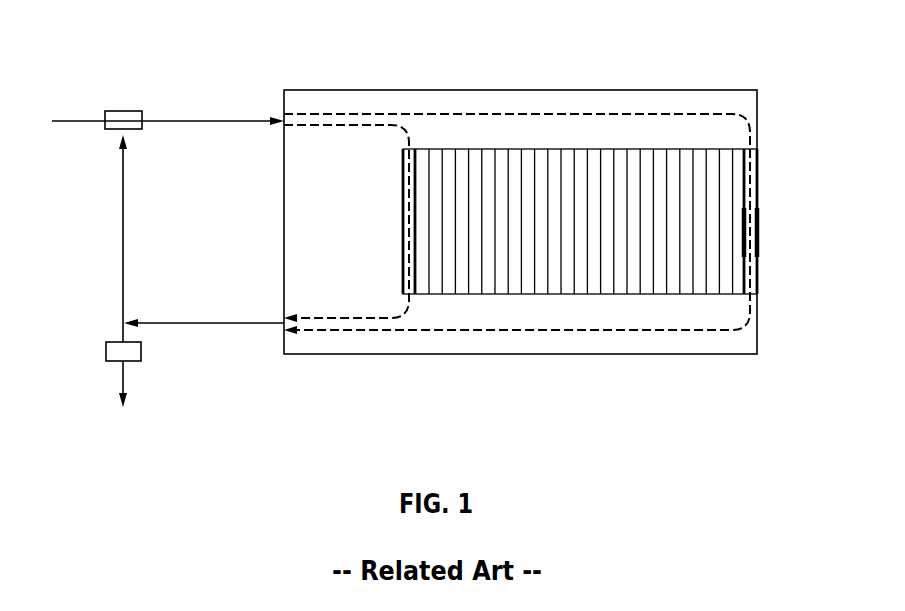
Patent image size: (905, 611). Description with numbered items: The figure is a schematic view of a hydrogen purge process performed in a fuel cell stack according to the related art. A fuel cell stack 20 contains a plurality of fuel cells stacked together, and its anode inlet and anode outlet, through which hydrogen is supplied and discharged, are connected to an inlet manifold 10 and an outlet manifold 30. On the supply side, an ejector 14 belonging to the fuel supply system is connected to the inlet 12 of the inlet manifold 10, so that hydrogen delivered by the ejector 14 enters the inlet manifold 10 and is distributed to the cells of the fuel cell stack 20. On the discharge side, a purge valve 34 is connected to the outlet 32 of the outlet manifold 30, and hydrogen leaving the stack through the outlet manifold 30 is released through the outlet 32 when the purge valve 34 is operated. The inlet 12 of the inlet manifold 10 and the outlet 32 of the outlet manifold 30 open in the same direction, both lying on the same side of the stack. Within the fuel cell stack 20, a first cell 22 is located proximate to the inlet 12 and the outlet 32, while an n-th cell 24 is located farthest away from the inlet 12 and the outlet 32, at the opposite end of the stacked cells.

The inlet manifold 10 is at (522, 84).
The inlet 12 is at (284, 139).
The ejector 14 is at (140, 129).
The fuel cell stack 20 is at (565, 304).
The first cell 22 is at (403, 253).
The n-th cell 24 is at (757, 236).
The outlet manifold 30 is at (389, 364).
The outlet 32 is at (284, 344).
The purge valve 34 is at (141, 352).